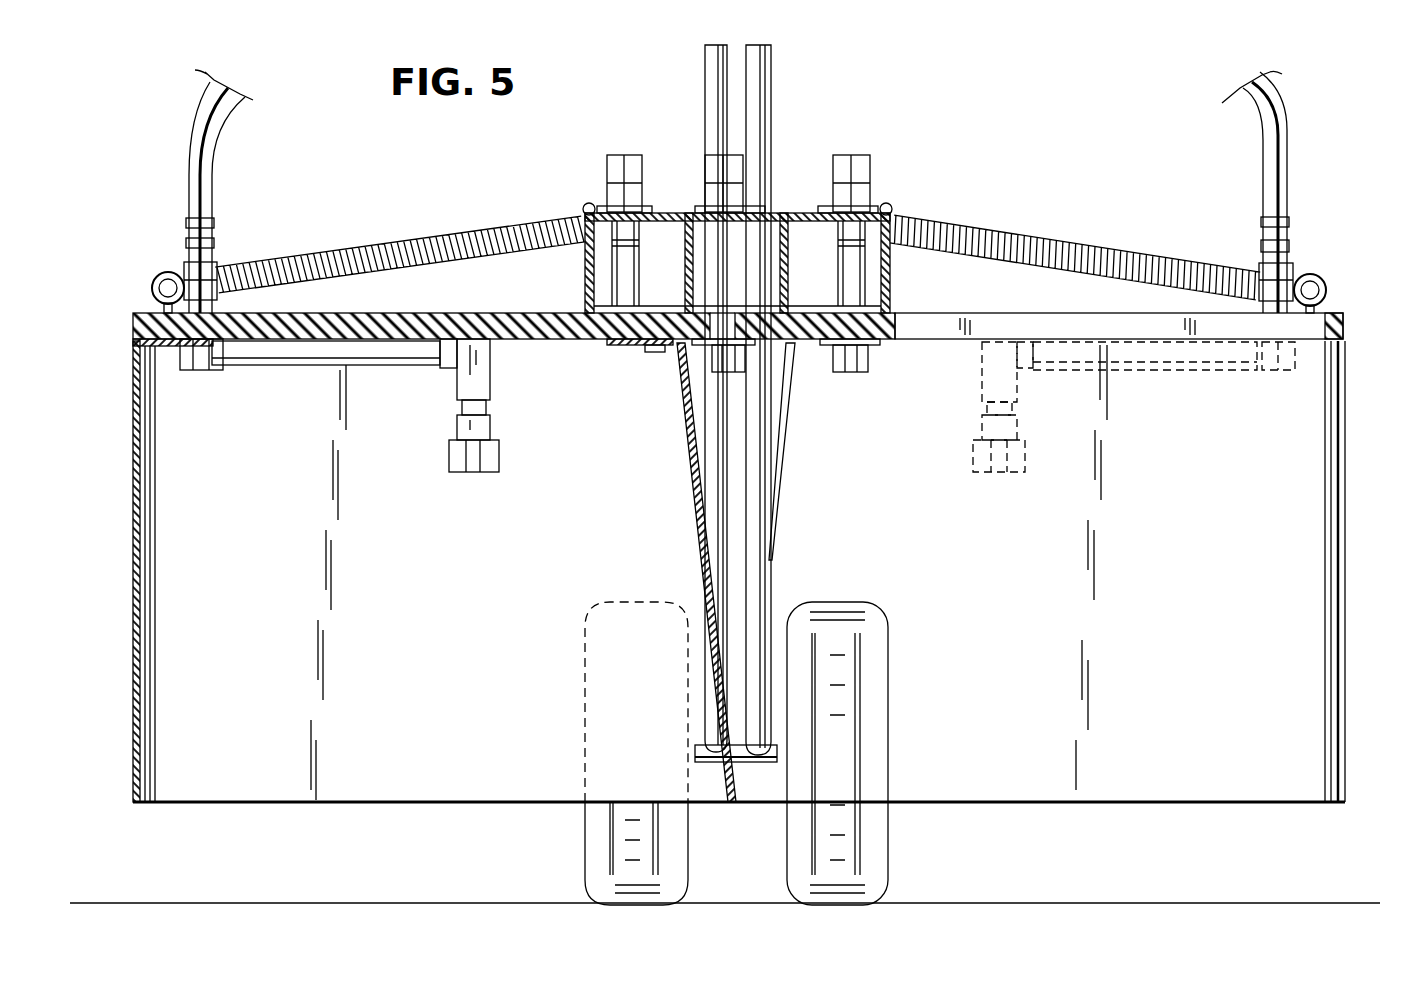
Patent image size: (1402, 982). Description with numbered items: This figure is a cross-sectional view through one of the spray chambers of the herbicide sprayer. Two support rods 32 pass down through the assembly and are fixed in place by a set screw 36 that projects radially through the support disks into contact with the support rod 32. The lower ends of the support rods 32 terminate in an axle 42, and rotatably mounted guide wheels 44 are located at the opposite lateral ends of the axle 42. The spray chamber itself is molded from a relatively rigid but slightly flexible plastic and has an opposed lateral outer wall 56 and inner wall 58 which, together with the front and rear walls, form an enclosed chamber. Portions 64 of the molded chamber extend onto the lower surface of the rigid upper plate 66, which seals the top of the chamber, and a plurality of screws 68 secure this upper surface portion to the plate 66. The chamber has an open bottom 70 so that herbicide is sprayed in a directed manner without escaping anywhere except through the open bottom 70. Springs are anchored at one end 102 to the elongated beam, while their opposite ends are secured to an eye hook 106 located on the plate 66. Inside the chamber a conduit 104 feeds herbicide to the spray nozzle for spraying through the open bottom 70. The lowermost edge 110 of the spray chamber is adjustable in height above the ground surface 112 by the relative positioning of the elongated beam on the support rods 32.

The support rod 32 is at (757, 545).
The set screw 36 is at (708, 428).
The axle 42 is at (742, 757).
The guide wheels 44 is at (608, 850).
The outer wall 56 is at (131, 452).
The inner wall 58 is at (783, 438).
The portions of the molded spray chamber 64 is at (163, 347).
The upper plate 66 is at (516, 313).
The screws 68 is at (651, 353).
The open bottom 70 is at (393, 818).
The end of spring 102 is at (197, 170).
The conduit 104 is at (283, 350).
The eye hook 106 is at (457, 452).
The lowermost edge 110 is at (281, 804).
The ground surface 112 is at (186, 901).